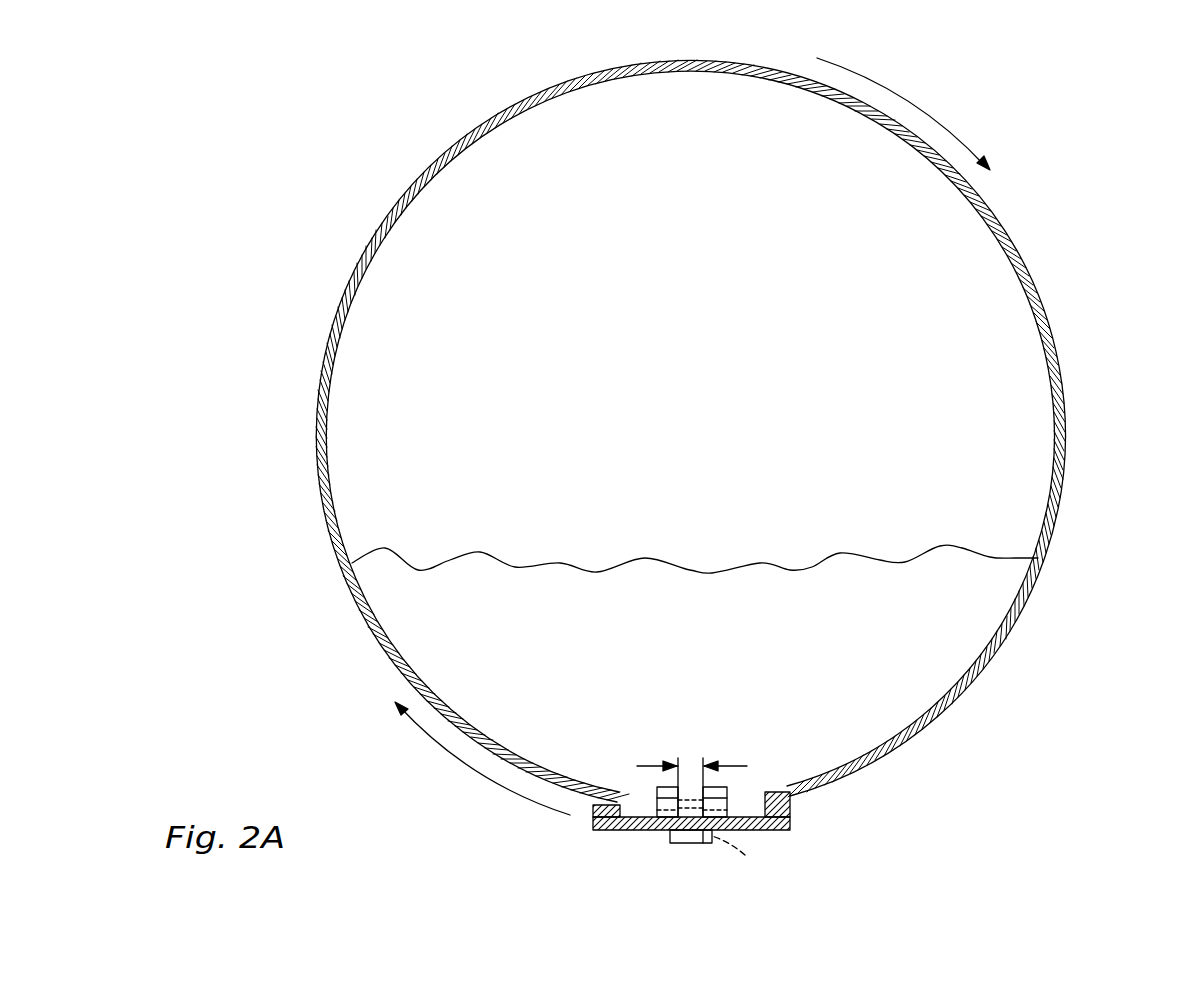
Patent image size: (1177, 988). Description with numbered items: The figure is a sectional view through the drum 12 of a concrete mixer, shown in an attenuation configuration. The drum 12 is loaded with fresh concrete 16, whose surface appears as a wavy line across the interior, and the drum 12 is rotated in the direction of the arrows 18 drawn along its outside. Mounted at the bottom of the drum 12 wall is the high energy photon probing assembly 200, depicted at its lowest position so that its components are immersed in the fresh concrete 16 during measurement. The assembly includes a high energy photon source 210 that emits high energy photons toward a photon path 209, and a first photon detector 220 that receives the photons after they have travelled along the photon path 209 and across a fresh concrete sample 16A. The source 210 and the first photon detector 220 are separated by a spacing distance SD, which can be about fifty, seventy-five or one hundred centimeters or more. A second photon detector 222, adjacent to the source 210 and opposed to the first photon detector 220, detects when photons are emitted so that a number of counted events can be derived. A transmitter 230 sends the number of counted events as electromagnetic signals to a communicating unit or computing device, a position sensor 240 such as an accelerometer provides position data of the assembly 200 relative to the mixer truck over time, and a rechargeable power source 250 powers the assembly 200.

The drum 12 is at (1032, 270).
The fresh concrete 16 is at (925, 589).
The arrows 18 is at (910, 99).
The high energy photon probing assembly 200 is at (695, 799).
The high energy photon source 210 is at (652, 800).
The first photon detector 220 is at (730, 800).
The second photon detector 222 is at (660, 766).
The transmitter 230 is at (633, 830).
The position sensor 240 is at (700, 843).
The rechargeable power source 250 is at (745, 830).
The photon path 209 is at (745, 855).
The fresh concrete sample 16A is at (705, 790).
The spacing distance SD is at (692, 768).